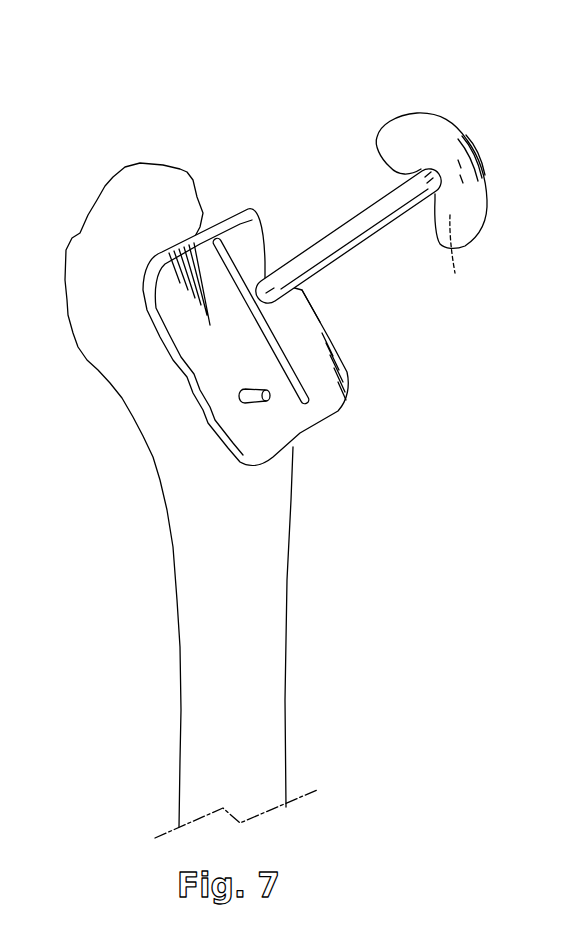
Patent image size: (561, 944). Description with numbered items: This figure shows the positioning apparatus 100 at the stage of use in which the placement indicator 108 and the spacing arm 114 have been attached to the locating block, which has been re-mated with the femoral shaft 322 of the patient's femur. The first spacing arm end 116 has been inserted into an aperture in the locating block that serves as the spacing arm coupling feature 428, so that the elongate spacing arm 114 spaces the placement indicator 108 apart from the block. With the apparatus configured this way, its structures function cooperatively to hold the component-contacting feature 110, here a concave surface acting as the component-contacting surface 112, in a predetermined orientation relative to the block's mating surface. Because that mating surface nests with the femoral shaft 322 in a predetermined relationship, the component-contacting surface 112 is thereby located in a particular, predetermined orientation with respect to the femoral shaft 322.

The positioning apparatus 100 is at (242, 200).
The placement indicator 108 is at (398, 162).
The component-contacting feature 110 is at (450, 152).
The component-contacting surface 112 is at (470, 256).
The spacing arm 114 is at (352, 217).
The first spacing arm end 116 is at (287, 309).
The femoral shaft 322 is at (292, 549).
The spacing arm coupling feature 428 is at (293, 260).